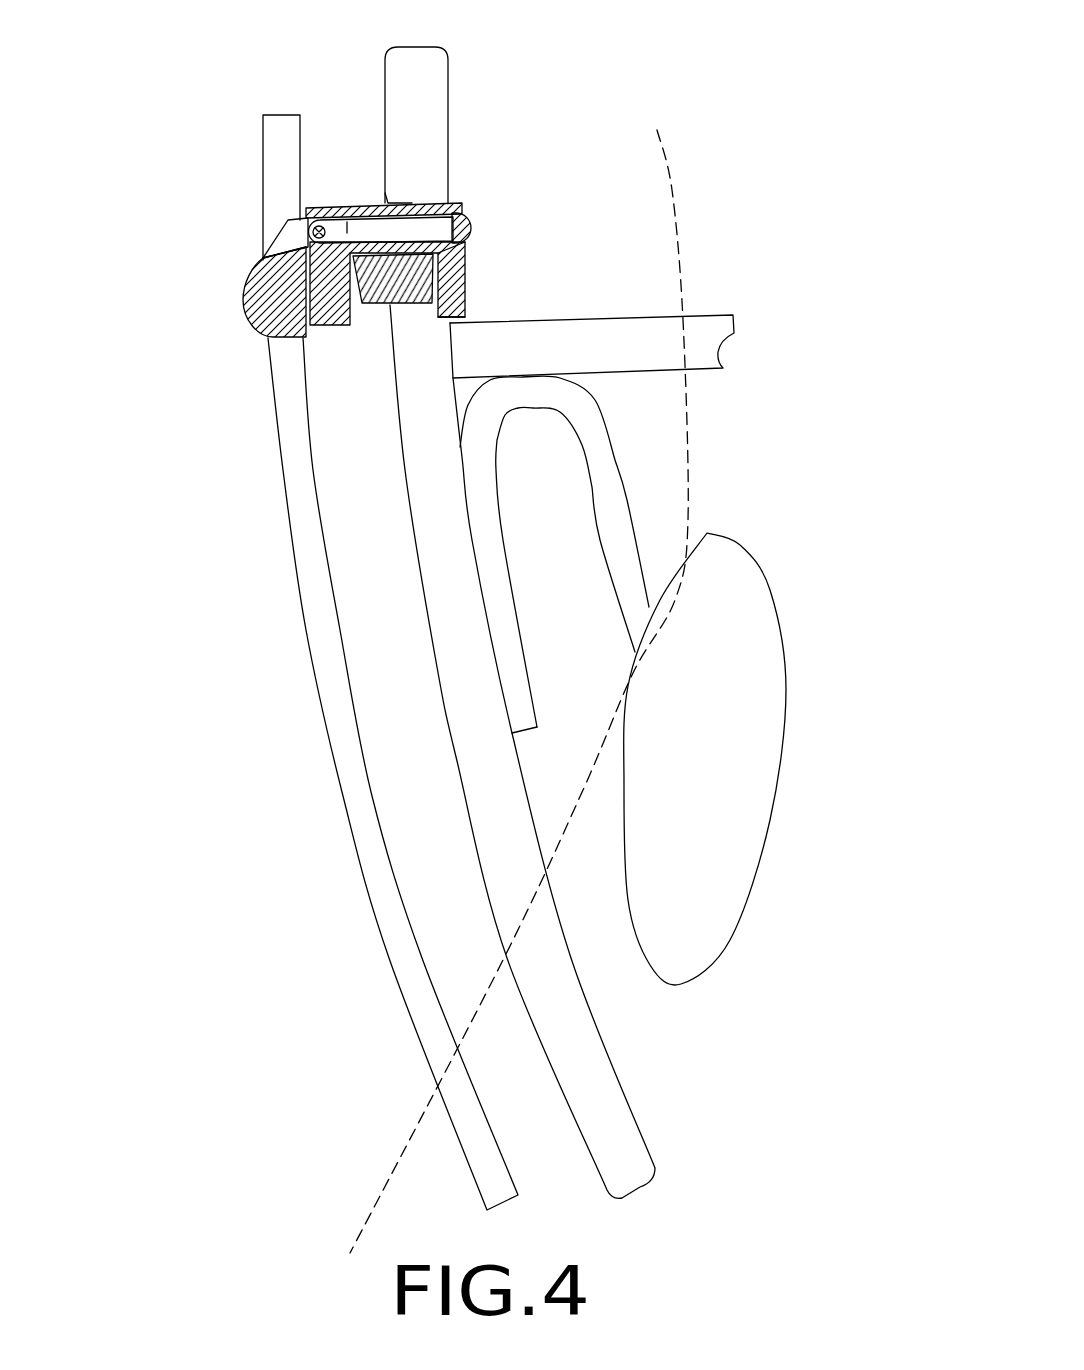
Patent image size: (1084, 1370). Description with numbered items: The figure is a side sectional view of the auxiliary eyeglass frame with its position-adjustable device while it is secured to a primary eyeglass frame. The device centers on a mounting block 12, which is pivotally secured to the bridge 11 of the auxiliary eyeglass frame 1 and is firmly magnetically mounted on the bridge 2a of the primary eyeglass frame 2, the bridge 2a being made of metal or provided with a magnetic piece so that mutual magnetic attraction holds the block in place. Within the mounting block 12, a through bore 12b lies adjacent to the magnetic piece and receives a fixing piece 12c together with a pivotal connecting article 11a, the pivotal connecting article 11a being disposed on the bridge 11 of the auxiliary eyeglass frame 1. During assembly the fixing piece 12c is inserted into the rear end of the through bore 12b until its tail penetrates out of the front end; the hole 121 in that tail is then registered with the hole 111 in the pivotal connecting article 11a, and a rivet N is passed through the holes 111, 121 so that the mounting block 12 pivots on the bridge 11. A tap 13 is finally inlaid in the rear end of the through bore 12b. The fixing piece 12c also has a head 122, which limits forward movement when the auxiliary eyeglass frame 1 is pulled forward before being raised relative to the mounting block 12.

The auxiliary eyeglass frame 1 is at (306, 631).
The primary eyeglass frame 2 is at (482, 753).
The bridge of primary eyeglass frame 2a is at (373, 305).
The bridge of auxiliary eyeglass frame 11 is at (244, 325).
The pivotal connecting article 11a is at (305, 220).
The hole 111 is at (283, 218).
The mounting block 12 is at (365, 200).
The through bore 12b is at (412, 203).
The fixing piece 12c is at (347, 200).
The tap 13 is at (470, 229).
The hole 121 is at (303, 250).
The head 122 is at (445, 257).
The rivet N is at (305, 232).